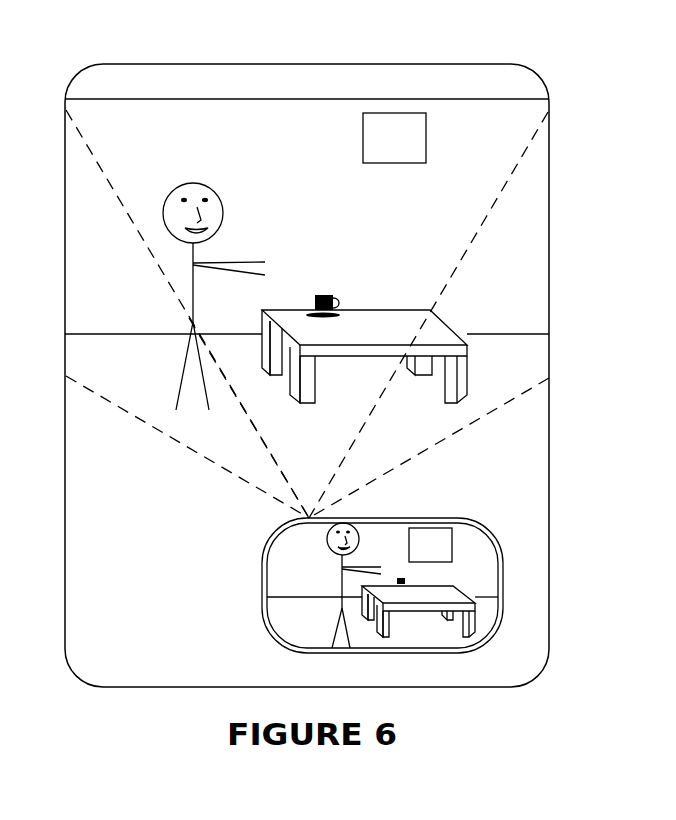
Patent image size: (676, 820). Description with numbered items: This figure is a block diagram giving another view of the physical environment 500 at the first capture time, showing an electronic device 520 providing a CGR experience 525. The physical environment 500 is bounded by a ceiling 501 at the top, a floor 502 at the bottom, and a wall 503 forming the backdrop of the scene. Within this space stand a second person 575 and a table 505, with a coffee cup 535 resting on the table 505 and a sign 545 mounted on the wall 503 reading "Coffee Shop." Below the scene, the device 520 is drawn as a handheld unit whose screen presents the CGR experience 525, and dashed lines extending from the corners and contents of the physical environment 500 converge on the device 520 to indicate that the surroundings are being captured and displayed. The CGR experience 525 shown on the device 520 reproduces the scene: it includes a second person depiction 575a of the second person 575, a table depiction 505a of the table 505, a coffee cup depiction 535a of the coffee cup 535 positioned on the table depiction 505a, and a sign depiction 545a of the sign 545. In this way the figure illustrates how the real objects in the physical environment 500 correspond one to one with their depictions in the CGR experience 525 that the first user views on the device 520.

The physical environment 500 is at (197, 54).
The ceiling 501 is at (163, 89).
The floor 502 is at (156, 664).
The wall 503 is at (196, 139).
The table 505 is at (376, 341).
The table depiction 505a is at (444, 603).
The electronic device 520 is at (262, 560).
The CGR experience 525 is at (319, 557).
The coffee cup 535 is at (335, 295).
The coffee cup depiction 535a is at (407, 580).
The sign 545 is at (363, 128).
The sign depiction 545a is at (443, 528).
The second person 575 is at (178, 190).
The second person depiction 575a is at (340, 606).